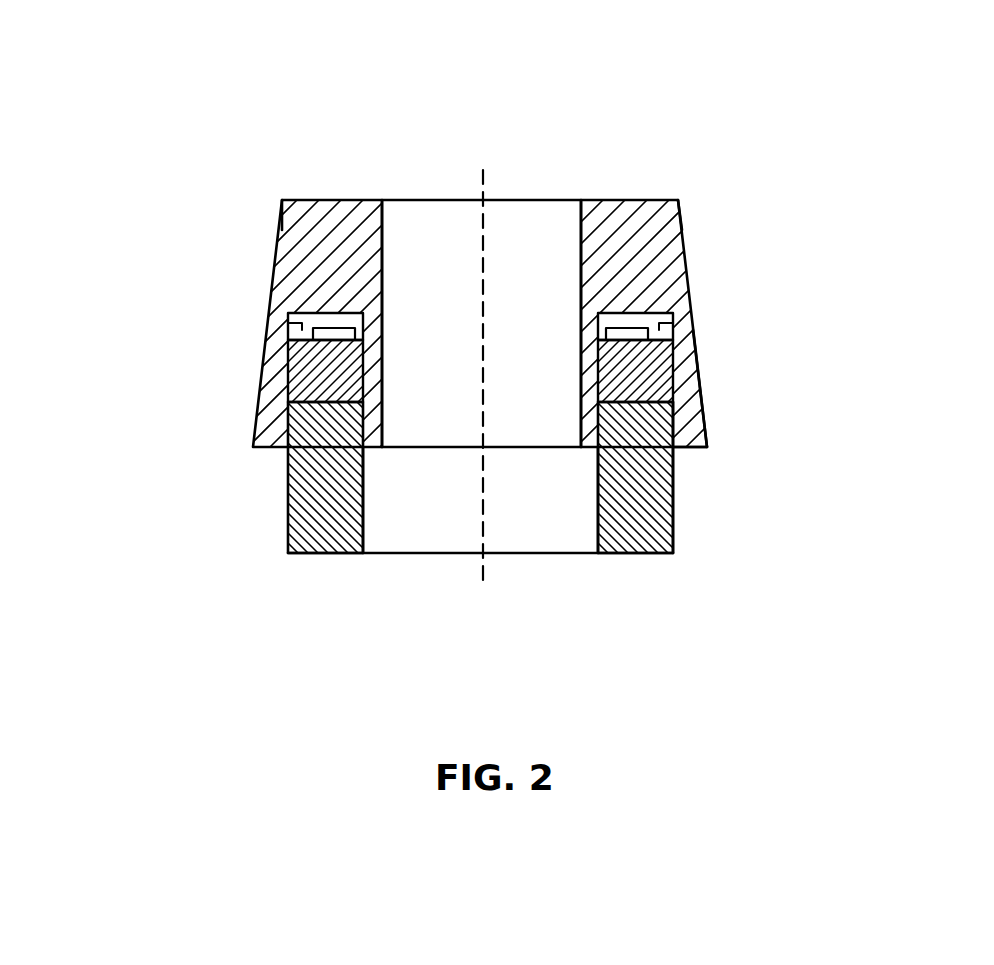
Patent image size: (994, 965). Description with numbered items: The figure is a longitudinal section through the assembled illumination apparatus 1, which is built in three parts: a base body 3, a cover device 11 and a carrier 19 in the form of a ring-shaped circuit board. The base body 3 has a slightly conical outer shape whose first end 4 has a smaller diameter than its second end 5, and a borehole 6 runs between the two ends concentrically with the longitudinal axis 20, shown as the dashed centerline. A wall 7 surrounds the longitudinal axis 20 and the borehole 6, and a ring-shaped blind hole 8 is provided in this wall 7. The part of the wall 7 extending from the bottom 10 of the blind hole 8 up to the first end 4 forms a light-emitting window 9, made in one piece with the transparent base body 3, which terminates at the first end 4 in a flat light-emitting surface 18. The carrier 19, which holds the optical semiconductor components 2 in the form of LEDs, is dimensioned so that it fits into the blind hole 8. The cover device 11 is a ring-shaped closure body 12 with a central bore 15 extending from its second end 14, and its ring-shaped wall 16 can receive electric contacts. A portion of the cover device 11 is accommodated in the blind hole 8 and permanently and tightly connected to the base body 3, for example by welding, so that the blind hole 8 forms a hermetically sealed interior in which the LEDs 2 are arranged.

The illumination apparatus 1 is at (148, 54).
The optical semiconductor components 2 is at (660, 322).
The base body 3 is at (728, 200).
The first end 4 is at (682, 200).
The second end 5 is at (693, 450).
The borehole 6 is at (388, 220).
The wall 7 is at (683, 421).
The blind hole 8 is at (300, 323).
The light-emitting window 9 is at (305, 255).
The bottom 10 is at (297, 322).
The cover device 11 is at (700, 543).
The closure body 12 is at (312, 553).
The second end 14 is at (665, 553).
The central bore 15 is at (365, 528).
The ring-shaped wall 16 is at (625, 540).
The light-emitting surface 18 is at (298, 200).
The carrier 19 is at (655, 376).
The longitudinal axis 20 is at (483, 170).